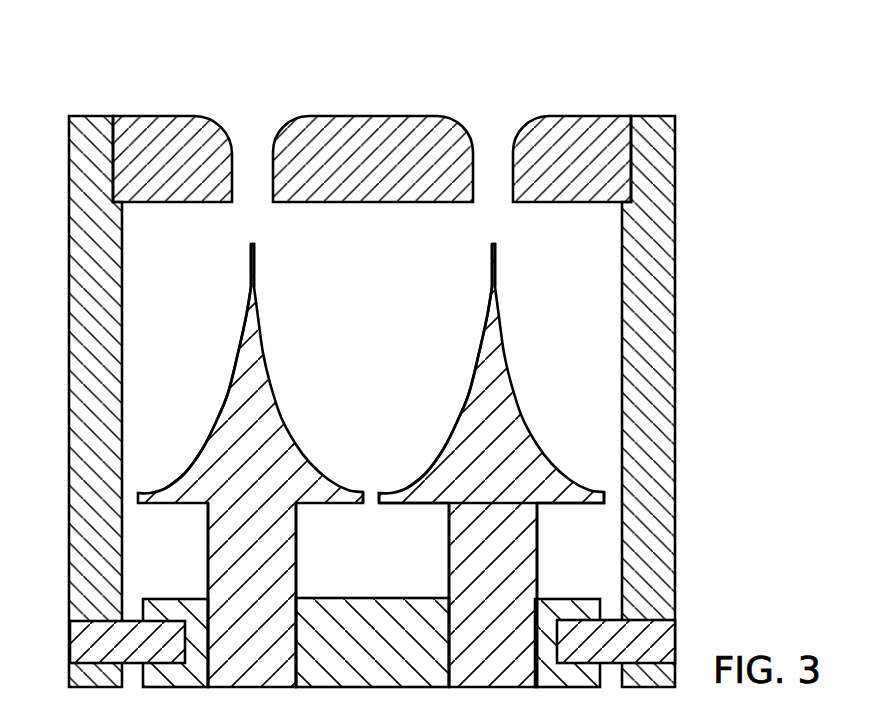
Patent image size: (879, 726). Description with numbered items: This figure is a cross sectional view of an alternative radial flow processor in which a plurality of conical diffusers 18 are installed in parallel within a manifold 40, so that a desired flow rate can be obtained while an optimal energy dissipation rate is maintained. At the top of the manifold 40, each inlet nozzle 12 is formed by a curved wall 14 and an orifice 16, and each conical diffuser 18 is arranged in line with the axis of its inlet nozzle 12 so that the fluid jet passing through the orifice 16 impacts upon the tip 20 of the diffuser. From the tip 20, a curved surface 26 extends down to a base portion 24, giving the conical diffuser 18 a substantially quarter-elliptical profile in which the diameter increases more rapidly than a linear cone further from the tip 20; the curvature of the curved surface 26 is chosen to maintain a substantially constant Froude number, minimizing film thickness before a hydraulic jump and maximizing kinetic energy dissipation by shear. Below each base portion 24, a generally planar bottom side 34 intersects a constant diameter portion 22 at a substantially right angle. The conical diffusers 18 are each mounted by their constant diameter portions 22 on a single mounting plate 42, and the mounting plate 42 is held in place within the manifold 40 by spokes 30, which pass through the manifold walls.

The manifold 40 is at (690, 76).
The inlet nozzle 12 is at (248, 130).
The curved wall 14 is at (277, 128).
The orifice 16 is at (258, 196).
The conical diffuser 18 is at (281, 377).
The tip 20 is at (252, 247).
The constant diameter portion 22 is at (297, 567).
The base portion 24 is at (582, 489).
The curved surface 26 is at (219, 419).
The spokes 30 is at (134, 621).
The bottom side 34 is at (342, 505).
The mounting plate 42 is at (589, 598).